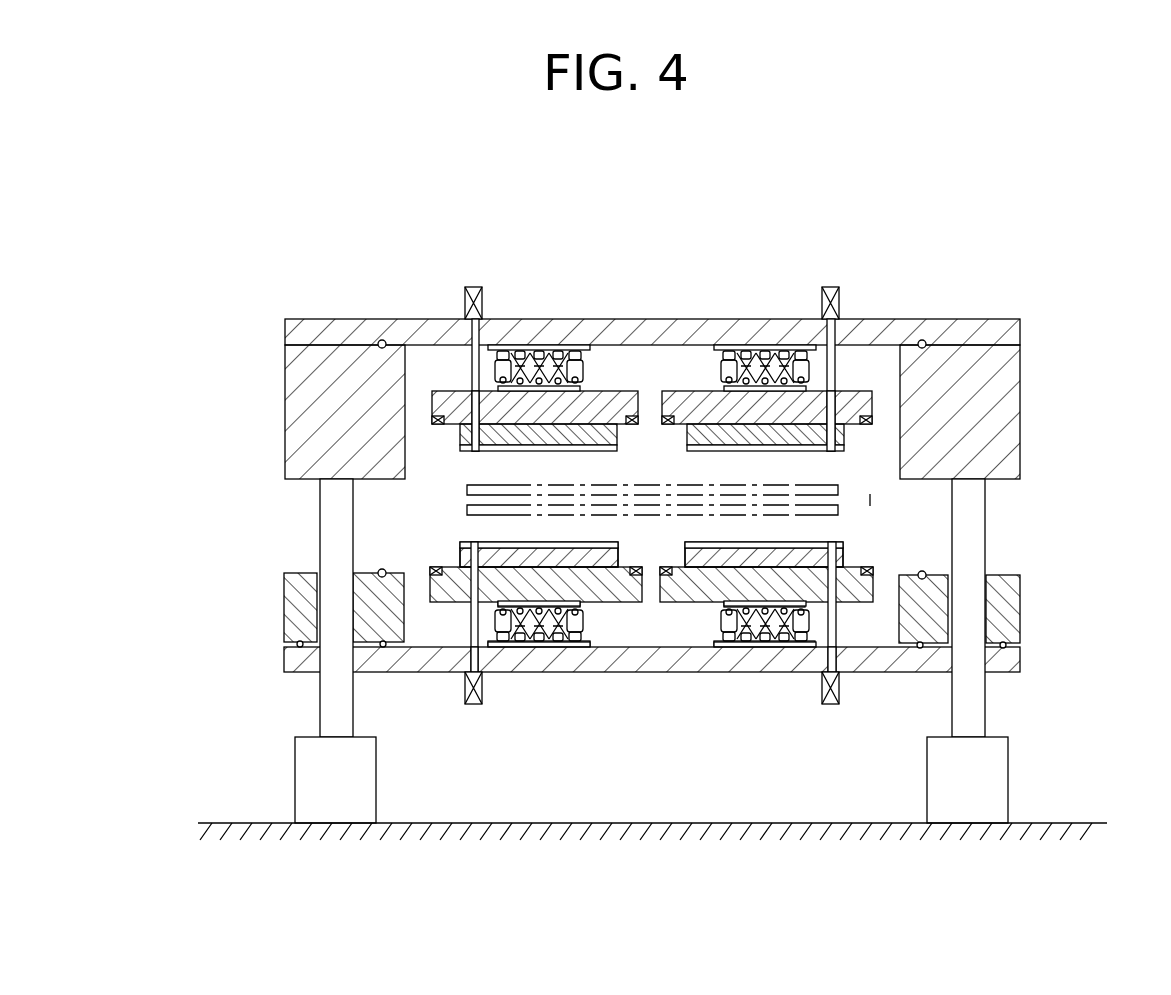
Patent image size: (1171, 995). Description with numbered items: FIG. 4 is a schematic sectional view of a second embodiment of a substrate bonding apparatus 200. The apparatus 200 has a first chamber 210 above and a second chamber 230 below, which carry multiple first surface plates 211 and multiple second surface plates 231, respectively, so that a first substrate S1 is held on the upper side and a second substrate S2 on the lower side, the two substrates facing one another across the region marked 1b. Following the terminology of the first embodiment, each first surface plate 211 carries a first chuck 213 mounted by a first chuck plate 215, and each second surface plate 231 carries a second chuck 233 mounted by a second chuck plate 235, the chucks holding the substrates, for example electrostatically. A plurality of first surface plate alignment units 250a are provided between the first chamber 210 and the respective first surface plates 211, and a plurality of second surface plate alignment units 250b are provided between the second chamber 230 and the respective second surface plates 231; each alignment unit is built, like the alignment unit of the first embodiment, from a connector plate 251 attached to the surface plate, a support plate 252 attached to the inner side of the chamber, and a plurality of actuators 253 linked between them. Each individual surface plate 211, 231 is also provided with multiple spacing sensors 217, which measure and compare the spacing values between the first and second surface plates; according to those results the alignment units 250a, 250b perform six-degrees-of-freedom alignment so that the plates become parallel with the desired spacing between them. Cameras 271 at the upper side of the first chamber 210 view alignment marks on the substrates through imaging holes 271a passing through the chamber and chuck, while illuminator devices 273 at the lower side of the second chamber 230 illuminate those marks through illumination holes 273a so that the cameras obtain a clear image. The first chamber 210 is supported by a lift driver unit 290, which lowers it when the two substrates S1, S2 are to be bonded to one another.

The substrate bonding apparatus 200 is at (705, 192).
The first chamber 210 is at (1021, 387).
The first surface plate 211 is at (443, 402).
The upper chuck plate 213 is at (460, 450).
The upper chuck holding plate 215 is at (460, 437).
The spacing sensor 217 is at (433, 419).
The second chamber 230 is at (1022, 611).
The second surface plate 231 is at (450, 590).
The lower chuck plate 233 is at (463, 556).
The lower chuck holding plate 235 is at (460, 551).
The first surface plate alignment unit 250a is at (614, 371).
The second surface plate alignment unit 250b is at (652, 688).
The upper fixing plate 251 is at (582, 605).
The lower fixing plate 252 is at (527, 646).
The elastic link member 253 is at (593, 629).
The upper driving unit 271 is at (463, 304).
The upper driving shaft 271a is at (469, 335).
The lower driving unit 273 is at (464, 692).
The lower driving shaft 273a is at (472, 654).
The support base 290 is at (293, 762).
The first substrate S1 is at (828, 484).
The second substrate S2 is at (830, 515).
The bonding gap 1b is at (875, 500).